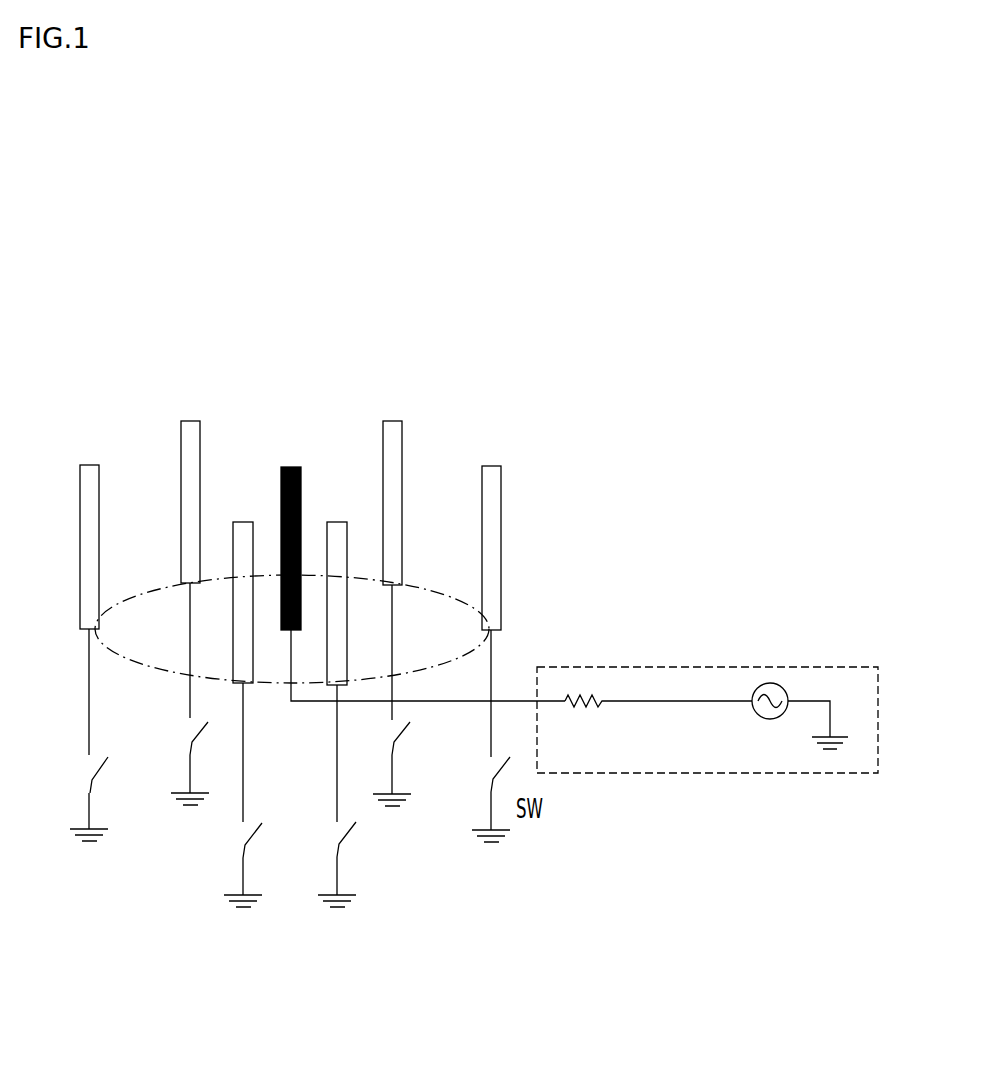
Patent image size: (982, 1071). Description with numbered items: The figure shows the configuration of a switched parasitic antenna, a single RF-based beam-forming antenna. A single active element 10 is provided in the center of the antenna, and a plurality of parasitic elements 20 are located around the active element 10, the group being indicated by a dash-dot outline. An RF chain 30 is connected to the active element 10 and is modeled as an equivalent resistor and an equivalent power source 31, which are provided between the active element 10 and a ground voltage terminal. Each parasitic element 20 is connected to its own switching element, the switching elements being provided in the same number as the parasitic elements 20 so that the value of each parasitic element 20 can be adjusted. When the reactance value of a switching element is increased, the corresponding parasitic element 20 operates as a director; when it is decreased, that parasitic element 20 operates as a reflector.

The active element 10 is at (291, 467).
The parasitic elements 20 is at (489, 466).
The RF chain 30 is at (707, 686).
The power source 31 is at (770, 683).